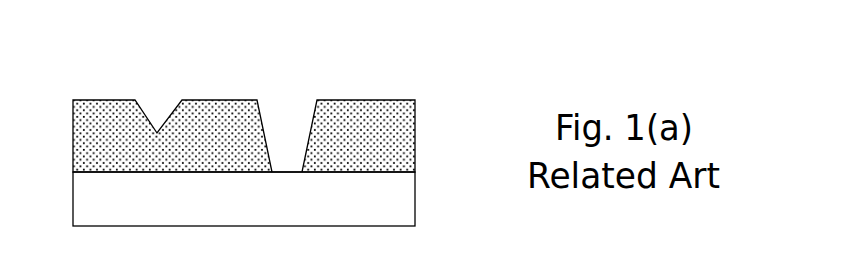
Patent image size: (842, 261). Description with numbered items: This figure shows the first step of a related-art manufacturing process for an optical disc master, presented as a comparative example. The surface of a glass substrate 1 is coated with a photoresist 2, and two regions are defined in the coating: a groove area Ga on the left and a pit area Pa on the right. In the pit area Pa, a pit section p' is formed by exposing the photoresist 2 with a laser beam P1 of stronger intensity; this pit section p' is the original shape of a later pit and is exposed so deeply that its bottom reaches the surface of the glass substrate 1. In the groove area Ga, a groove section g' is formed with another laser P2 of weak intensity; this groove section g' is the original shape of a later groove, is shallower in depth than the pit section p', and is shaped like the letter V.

The glass substrate 1 is at (72, 197).
The photoresist 2 is at (72, 135).
The laser beam P1 is at (287, 46).
The laser P2 is at (157, 46).
The groove area Ga is at (101, 71).
The pit area Pa is at (364, 70).
The groove section g' is at (178, 89).
The pit section p' is at (307, 100).